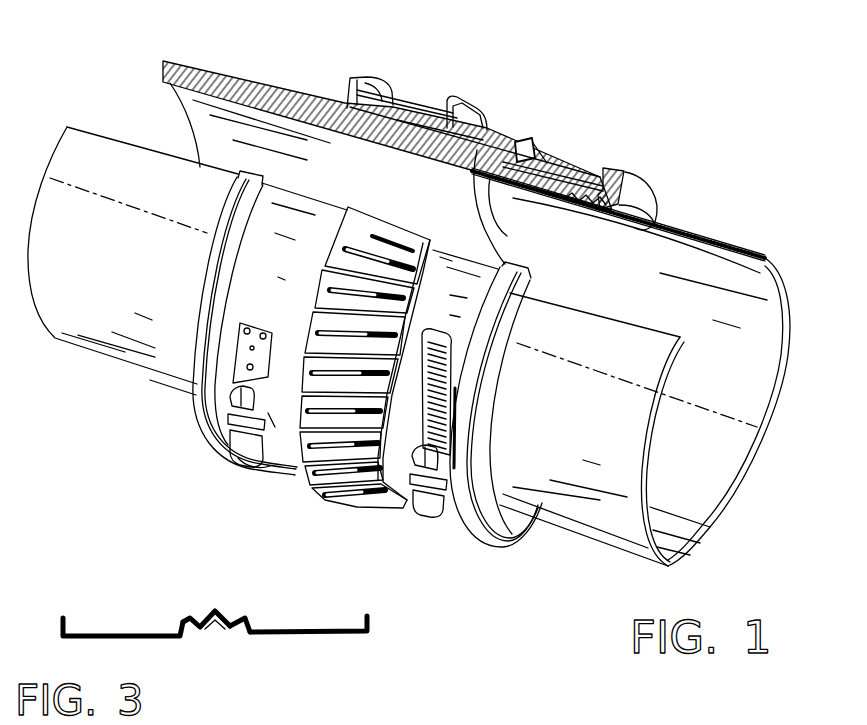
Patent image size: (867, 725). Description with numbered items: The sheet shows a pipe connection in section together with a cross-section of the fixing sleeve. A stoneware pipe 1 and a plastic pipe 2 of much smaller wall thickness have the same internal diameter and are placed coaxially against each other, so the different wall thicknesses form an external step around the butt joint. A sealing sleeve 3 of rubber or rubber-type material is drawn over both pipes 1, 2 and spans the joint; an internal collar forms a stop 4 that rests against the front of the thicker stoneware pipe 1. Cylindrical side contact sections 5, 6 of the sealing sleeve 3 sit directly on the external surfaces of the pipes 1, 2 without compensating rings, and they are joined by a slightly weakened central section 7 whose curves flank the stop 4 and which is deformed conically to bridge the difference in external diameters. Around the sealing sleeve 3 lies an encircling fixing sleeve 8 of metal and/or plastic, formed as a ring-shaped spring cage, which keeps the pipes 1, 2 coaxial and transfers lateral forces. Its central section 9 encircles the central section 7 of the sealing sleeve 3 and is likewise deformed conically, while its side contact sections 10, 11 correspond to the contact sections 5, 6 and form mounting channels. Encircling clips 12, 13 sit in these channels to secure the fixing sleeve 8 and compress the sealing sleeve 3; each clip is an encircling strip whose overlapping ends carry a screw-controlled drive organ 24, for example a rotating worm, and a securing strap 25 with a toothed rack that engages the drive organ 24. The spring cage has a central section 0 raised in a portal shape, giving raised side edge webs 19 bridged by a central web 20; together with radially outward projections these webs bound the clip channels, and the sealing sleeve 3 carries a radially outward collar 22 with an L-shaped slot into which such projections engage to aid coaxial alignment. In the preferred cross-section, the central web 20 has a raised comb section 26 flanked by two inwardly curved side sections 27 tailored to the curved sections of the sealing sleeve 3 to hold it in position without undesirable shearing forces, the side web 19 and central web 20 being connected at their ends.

In FIG. 1, the stoneware pipe 1 is at (182, 62).
In FIG. 1, the plastic pipe 2 is at (720, 244).
In FIG. 1, the sealing sleeve 3 is at (640, 167).
In FIG. 1, the stop 4 is at (487, 128).
In FIG. 1, the side contact section 5 is at (330, 98).
In FIG. 1, the side contact section 6 is at (645, 206).
In FIG. 1, the central section 7 is at (487, 180).
In FIG. 1, the fixing sleeve 8 is at (453, 92).
In FIG. 1, the central section 9 is at (528, 147).
In FIG. 3, the central section 9 is at (275, 620).
In FIG. 1, the side contact section 10 is at (424, 98).
In FIG. 1, the side contact section 11 is at (582, 168).
In FIG. 1, the encircling clip 12 is at (363, 72).
In FIG. 1, the encircling clip 13 is at (555, 166).
In FIG. 1, the central section 0 is at (499, 117).
In FIG. 3, the edge web 19 is at (180, 622).
In FIG. 3, the central web 20 is at (215, 636).
In FIG. 1, the collar 22 is at (655, 182).
In FIG. 1, the drive organ 24 is at (431, 505).
In FIG. 1, the securing strap 25 is at (445, 407).
In FIG. 3, the raised comb section 26 is at (216, 607).
In FIG. 3, the inwardly curved side section 27 is at (244, 612).